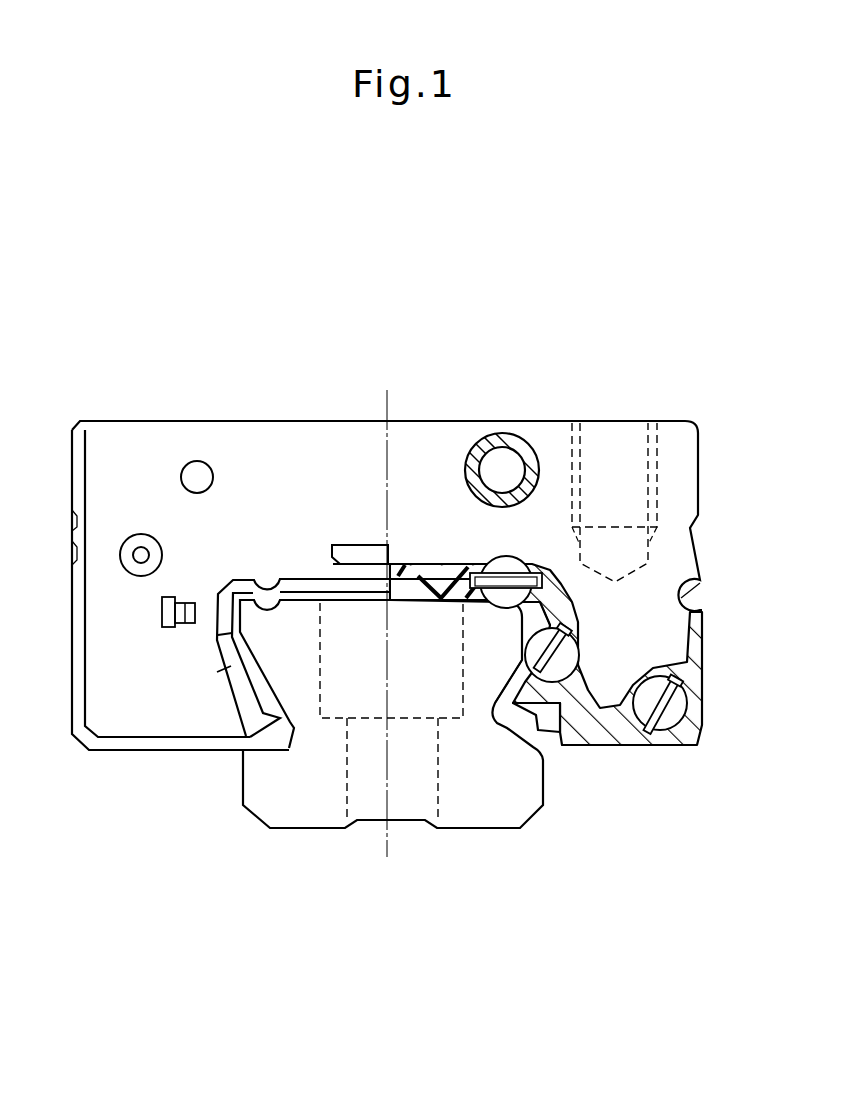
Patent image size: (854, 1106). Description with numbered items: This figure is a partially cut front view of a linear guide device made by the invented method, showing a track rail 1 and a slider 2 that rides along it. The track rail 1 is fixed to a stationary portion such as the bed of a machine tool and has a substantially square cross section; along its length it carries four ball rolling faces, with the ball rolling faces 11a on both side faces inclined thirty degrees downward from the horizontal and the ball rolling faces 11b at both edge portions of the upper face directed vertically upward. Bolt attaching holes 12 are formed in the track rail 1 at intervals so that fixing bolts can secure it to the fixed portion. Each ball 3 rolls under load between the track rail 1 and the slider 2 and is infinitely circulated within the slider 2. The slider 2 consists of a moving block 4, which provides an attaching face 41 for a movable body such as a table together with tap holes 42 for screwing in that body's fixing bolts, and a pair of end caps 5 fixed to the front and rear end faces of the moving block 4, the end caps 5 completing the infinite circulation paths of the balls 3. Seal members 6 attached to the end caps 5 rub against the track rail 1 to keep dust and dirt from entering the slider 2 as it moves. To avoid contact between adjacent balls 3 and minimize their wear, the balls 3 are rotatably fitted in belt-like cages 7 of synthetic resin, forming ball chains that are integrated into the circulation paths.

The track rail 1 is at (255, 834).
The slider 2 is at (183, 410).
The ball 3 is at (490, 566).
The moving block 4 is at (678, 433).
The end cap 5 is at (115, 442).
The seal member 6 is at (280, 568).
The belt-like cage 7 is at (518, 573).
The ball rolling face 11a is at (562, 660).
The ball rolling face 11b is at (503, 610).
The bolt attaching hole 12 is at (438, 780).
The attaching face 41 is at (649, 423).
The tap hole 42 is at (580, 480).